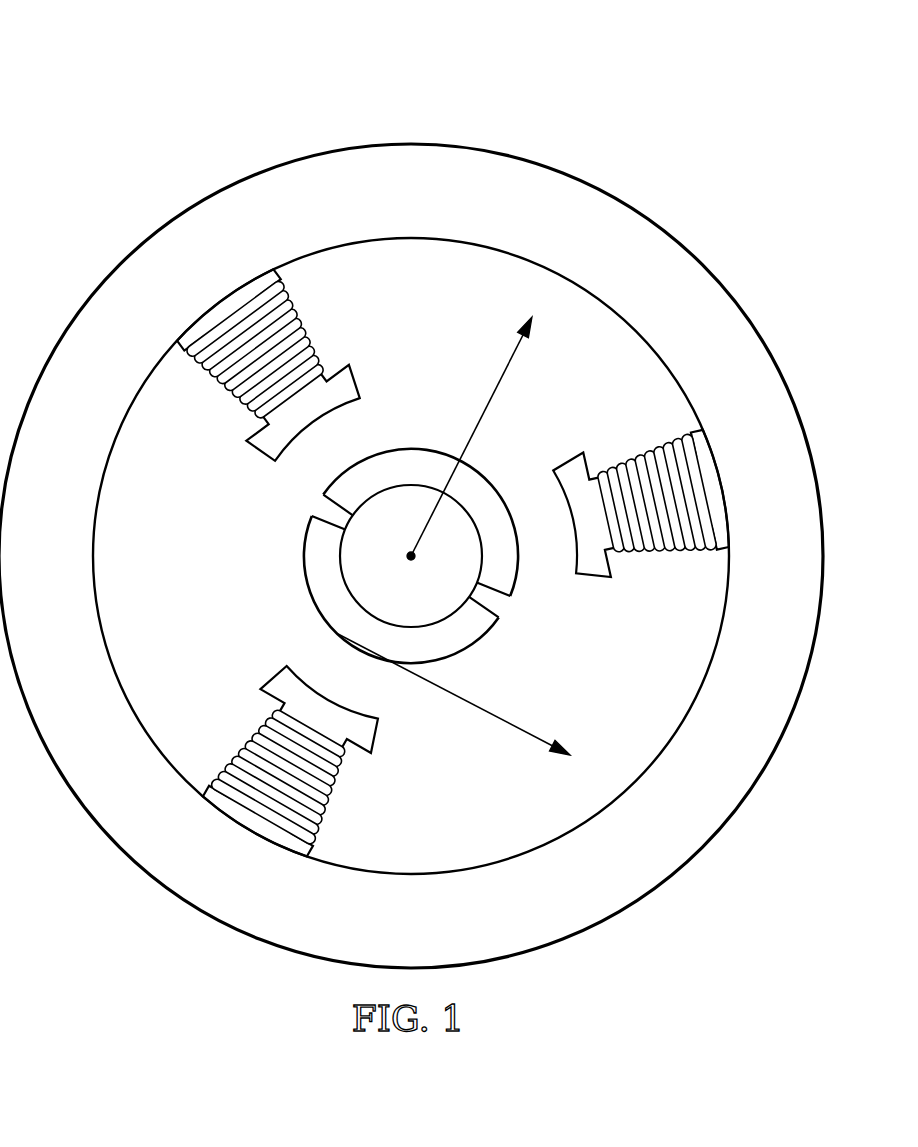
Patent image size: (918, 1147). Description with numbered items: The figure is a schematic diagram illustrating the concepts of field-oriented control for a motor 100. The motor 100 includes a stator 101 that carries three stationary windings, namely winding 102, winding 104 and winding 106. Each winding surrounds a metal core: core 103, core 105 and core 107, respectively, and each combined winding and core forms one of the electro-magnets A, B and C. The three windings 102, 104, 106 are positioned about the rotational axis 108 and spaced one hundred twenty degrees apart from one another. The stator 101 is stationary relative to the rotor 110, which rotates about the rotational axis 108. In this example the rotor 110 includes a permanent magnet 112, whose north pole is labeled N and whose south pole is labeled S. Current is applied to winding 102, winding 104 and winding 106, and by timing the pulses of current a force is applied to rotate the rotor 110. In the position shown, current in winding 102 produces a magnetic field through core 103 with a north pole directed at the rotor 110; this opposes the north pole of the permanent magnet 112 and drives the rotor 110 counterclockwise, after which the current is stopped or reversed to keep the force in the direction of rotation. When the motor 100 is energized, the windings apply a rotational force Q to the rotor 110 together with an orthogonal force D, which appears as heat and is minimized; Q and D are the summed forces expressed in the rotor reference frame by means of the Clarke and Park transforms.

The motor 100 is at (222, 64).
The stator 101 is at (572, 174).
The winding 102 is at (653, 445).
The core 103 is at (713, 488).
The winding 104 is at (302, 314).
The core 105 is at (226, 309).
The winding 106 is at (230, 750).
The core 107 is at (247, 820).
The rotational axis 108 is at (412, 560).
The rotor 110 is at (369, 527).
The permanent magnet 112 is at (410, 450).